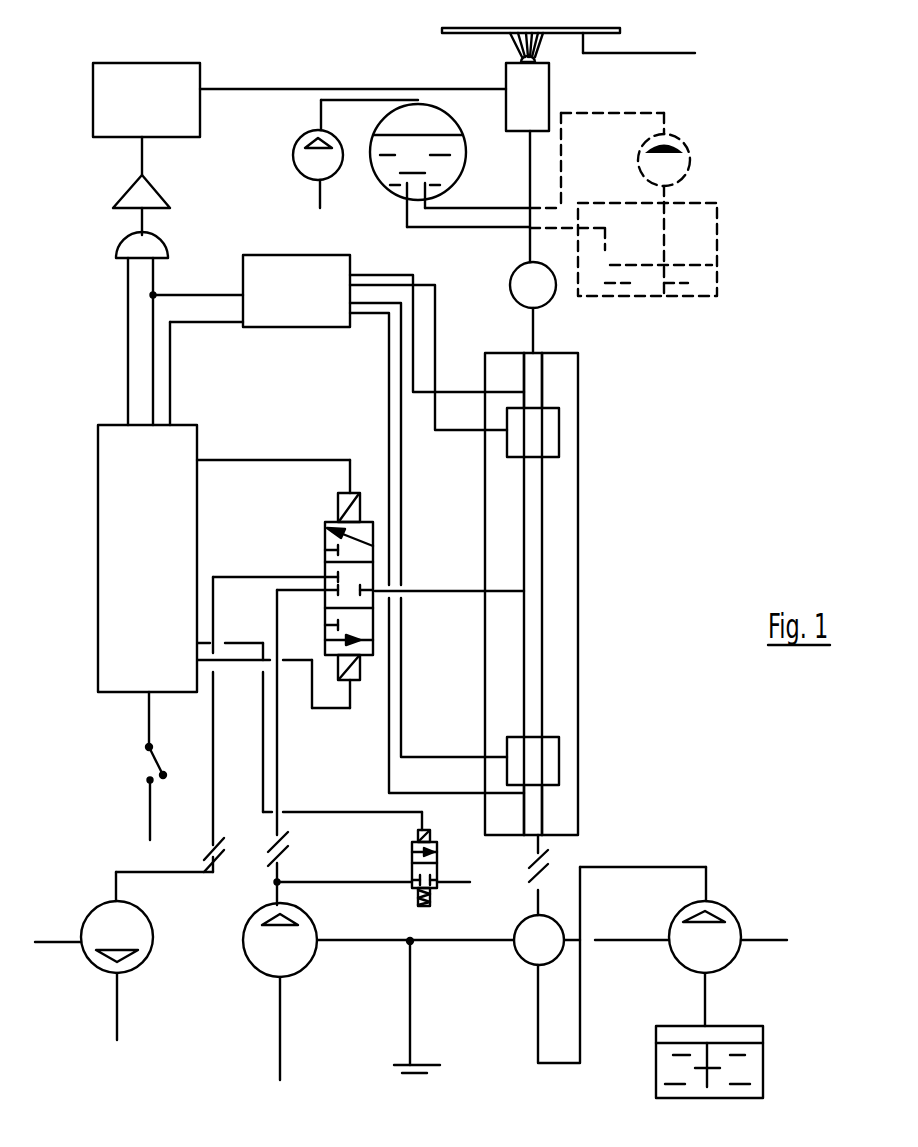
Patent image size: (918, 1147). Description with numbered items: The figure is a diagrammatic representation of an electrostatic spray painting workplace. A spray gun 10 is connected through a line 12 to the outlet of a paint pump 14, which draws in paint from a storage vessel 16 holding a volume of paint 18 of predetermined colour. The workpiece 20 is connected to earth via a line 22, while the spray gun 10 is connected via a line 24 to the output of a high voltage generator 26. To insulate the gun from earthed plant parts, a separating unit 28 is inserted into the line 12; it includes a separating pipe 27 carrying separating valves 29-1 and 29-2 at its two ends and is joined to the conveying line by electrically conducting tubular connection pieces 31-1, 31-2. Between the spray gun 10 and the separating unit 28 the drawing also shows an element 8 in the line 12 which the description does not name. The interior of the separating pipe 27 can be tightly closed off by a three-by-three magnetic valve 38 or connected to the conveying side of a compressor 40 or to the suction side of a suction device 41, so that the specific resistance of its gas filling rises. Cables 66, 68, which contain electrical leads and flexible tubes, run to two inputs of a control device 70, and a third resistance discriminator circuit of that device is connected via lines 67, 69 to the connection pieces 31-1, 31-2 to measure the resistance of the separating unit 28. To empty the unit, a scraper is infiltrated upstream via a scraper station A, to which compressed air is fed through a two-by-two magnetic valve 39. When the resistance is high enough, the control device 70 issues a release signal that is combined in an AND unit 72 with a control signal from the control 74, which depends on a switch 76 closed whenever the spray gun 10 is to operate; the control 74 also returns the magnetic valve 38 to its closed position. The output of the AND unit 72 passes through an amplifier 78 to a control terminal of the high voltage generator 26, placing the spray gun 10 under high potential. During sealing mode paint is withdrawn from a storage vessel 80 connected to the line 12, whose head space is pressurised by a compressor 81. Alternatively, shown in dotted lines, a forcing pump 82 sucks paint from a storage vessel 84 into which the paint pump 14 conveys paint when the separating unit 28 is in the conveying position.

The metering device 8 is at (526, 266).
The spray gun 10 is at (535, 100).
The line 12 is at (538, 310).
The paint pump 14 is at (742, 910).
The storage vessel 16 is at (733, 1025).
The volume of paint 18 is at (743, 1068).
The workpiece 20 is at (441, 35).
The line 22 is at (670, 53).
The line 24 is at (210, 88).
The high voltage generator 26 is at (135, 97).
The separating pipe 27 is at (533, 540).
The separating unit 28 is at (605, 500).
The separating valve 29-1 is at (547, 765).
The separating valve 29-2 is at (548, 430).
The tubular connection piece 31-1 is at (537, 813).
The tubular connection piece 31-2 is at (528, 380).
The 3/3 magnetic valve 38 is at (323, 542).
The 2/2 magnetic valve 39 is at (410, 862).
The compressor 40 is at (313, 923).
The suction device 41 is at (140, 928).
The cable 66 is at (437, 287).
The line 67 is at (385, 277).
The cable 68 is at (402, 340).
The line 69 is at (390, 445).
The control device 70 is at (305, 300).
The AND unit 72 is at (148, 250).
The control 74 is at (155, 556).
The switch 76 is at (160, 752).
The amplifier 78 is at (145, 195).
The storage vessel 80 is at (418, 104).
The compressor 81 is at (300, 148).
The forcing pump 82 is at (690, 150).
The storage vessel 84 is at (702, 238).
The scraper station A is at (525, 940).